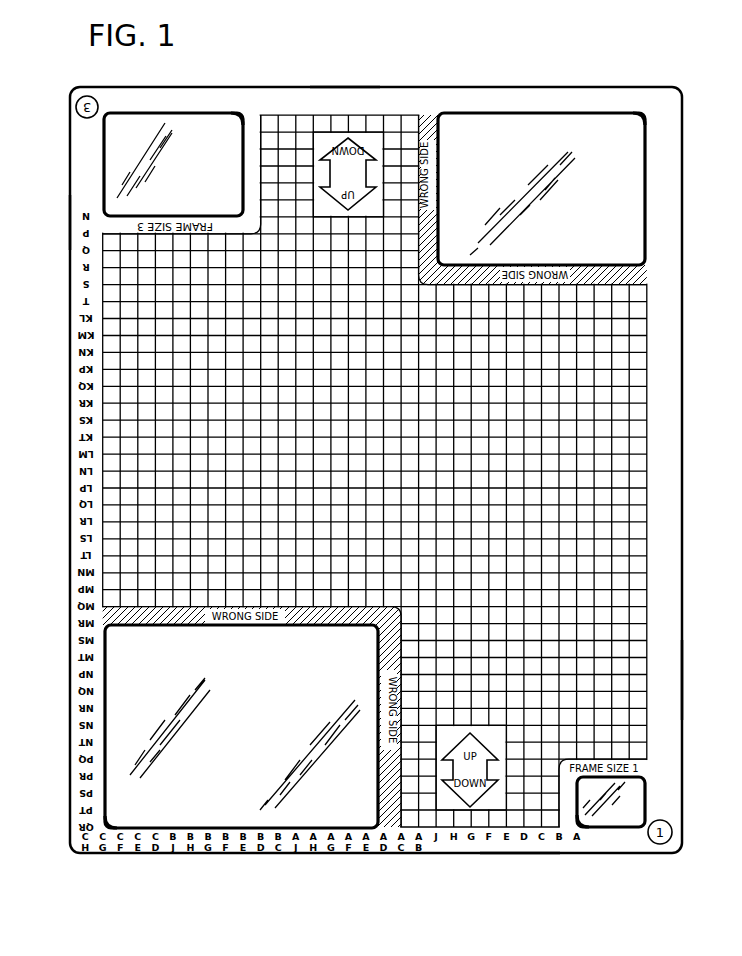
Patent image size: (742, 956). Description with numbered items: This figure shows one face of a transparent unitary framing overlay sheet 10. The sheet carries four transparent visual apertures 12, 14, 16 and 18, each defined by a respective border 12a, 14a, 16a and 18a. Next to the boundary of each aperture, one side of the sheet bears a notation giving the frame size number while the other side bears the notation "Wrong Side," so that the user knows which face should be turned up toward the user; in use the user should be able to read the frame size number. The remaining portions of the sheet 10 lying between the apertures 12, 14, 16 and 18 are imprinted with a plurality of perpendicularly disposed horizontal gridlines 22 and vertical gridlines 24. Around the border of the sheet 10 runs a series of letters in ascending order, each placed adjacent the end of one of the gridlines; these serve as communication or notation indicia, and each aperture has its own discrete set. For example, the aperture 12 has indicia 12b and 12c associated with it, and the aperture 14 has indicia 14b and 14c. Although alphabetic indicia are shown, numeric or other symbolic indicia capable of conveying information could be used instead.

The transparent unitary framing overlay sheet 10 is at (573, 61).
The transparent visual aperture 12 is at (638, 800).
The border 12a is at (599, 820).
The indicia 12b is at (687, 672).
The indicia 12c is at (520, 855).
The transparent visual aperture 14 is at (175, 121).
The border 14a is at (220, 115).
The indicia 14b is at (67, 217).
The indicia 14c is at (345, 82).
The transparent visual aperture 16 is at (522, 125).
The border 16a is at (645, 128).
The transparent visual aperture 18 is at (233, 808).
The border 18a is at (130, 822).
The horizontal gridlines 22 is at (618, 386).
The vertical gridlines 24 is at (410, 126).